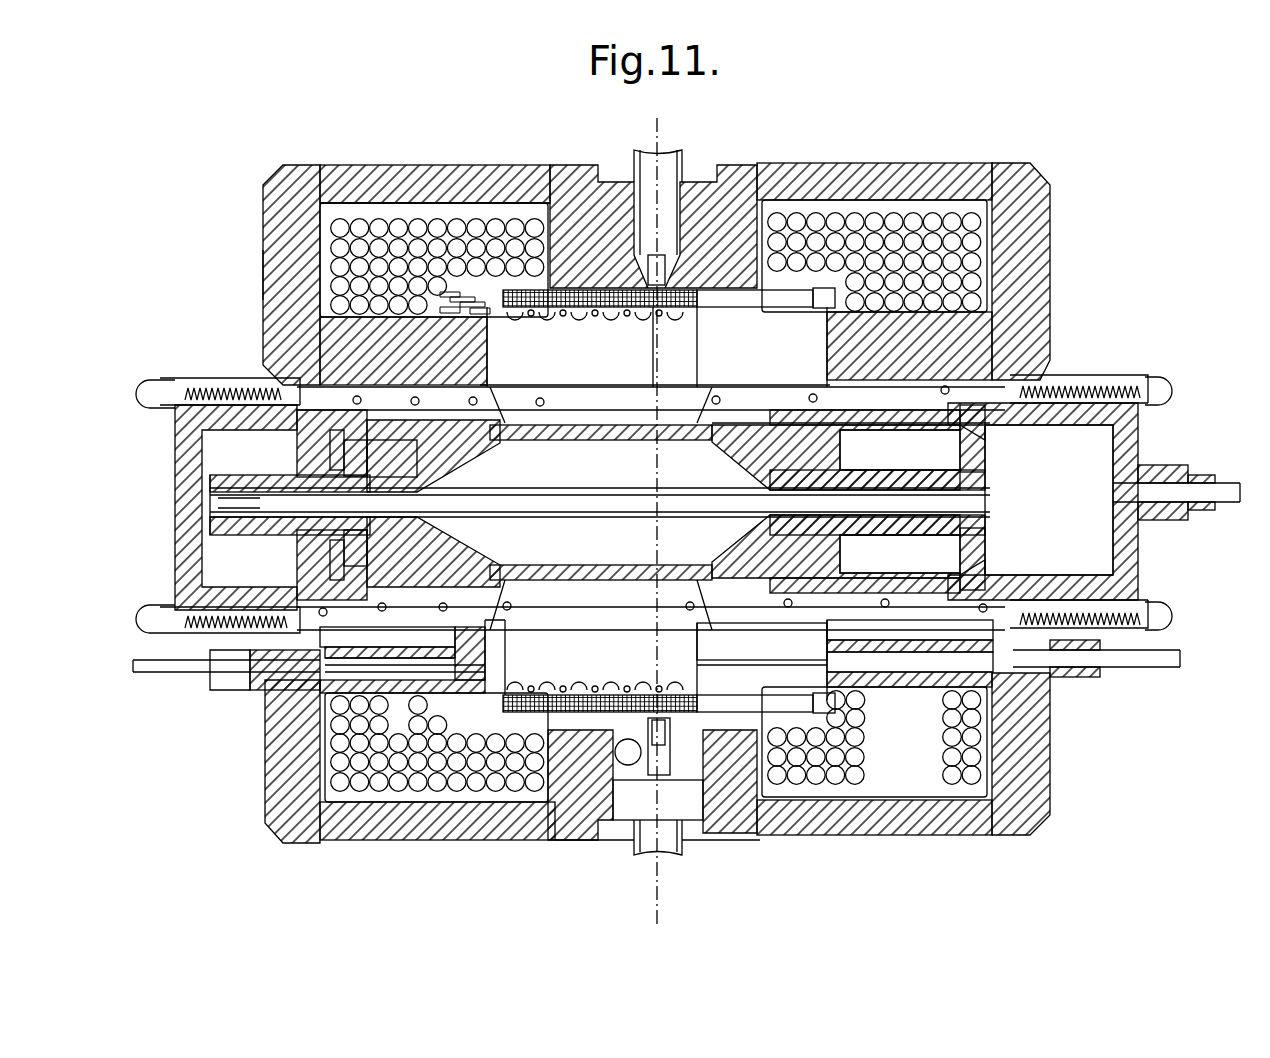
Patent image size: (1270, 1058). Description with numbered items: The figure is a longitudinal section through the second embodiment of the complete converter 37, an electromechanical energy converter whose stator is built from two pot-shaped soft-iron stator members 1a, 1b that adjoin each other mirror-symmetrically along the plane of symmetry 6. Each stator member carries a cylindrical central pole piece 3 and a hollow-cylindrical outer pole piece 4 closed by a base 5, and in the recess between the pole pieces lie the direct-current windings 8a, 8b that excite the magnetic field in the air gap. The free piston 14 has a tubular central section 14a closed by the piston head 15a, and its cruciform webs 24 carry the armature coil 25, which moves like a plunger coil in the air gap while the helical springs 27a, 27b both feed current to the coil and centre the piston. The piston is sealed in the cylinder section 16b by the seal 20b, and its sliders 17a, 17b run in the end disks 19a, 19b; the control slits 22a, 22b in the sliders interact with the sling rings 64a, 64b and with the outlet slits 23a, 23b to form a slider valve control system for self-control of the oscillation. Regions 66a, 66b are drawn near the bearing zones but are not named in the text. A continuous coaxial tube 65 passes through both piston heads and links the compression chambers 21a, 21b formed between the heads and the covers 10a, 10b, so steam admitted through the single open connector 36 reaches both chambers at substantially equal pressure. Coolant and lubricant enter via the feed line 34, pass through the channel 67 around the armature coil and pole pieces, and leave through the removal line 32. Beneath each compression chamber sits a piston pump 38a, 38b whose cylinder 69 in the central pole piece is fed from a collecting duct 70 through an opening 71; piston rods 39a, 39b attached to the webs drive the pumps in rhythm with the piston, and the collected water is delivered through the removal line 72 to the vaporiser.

The converter 37 is at (184, 236).
The stator member 1a is at (358, 150).
The stator member 1b is at (964, 152).
The outer pole piece 4 is at (428, 168).
The base 5 is at (283, 272).
The central pole piece 3 is at (312, 345).
The winding 8a is at (490, 245).
The winding 8b is at (822, 238).
The plane of symmetry 6 is at (650, 128).
The feed line 34 is at (663, 162).
The channel 67 is at (665, 205).
The armature coil 25 is at (690, 300).
The webs 24 is at (682, 360).
The spring 27a is at (545, 402).
The spring 27b is at (947, 388).
The piston 14 is at (625, 592).
The tube 14a is at (642, 442).
The piston head 15a is at (458, 538).
The outlet slit 23a is at (490, 412).
The outlet slit 23b is at (788, 428).
The seal 20b is at (760, 420).
The tube 65 is at (600, 512).
The slider 17a is at (232, 482).
The slider 17b is at (912, 478).
The bearing seat 66a is at (375, 470).
The bearing seat 66b is at (930, 574).
The control slit 22a is at (328, 545).
The control slit 22b is at (862, 456).
The end disk 19a is at (320, 462).
The end disk 19b is at (978, 570).
The sling ring 64a is at (330, 470).
The sling ring 64b is at (985, 448).
The cover 10a is at (185, 538).
The cover 10b is at (1135, 432).
The cylinder section 16b is at (842, 425).
The compression chamber 21b is at (1098, 550).
The connector 36 is at (1195, 490).
The piston pump 38a is at (401, 708).
The piston pump 38b is at (894, 703).
The removal line 32 is at (680, 845).
The cylinder 69 is at (945, 690).
The collecting duct 70 is at (932, 640).
The opening 71 is at (848, 658).
The piston rod 39a is at (252, 690).
The piston rod 39b is at (720, 662).
The compression chamber 21a is at (222, 642).
The removal line 72 is at (1115, 665).